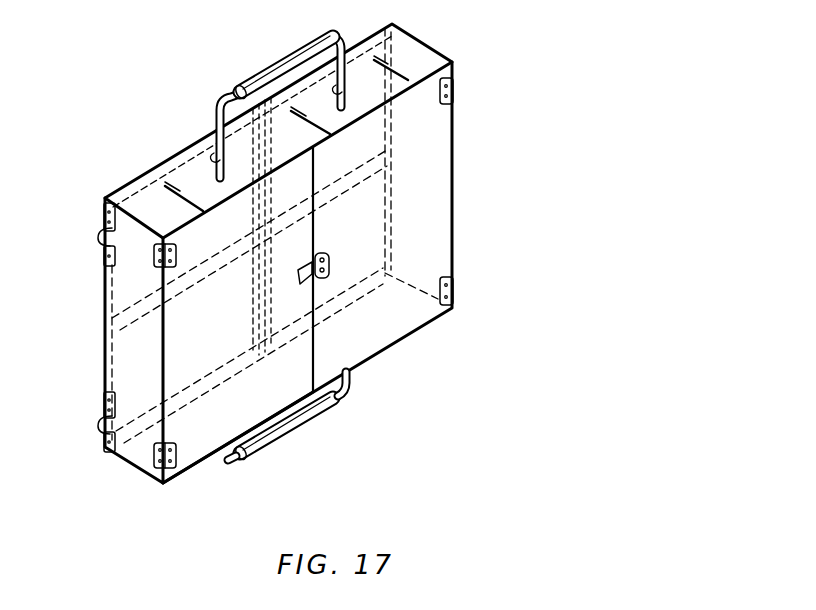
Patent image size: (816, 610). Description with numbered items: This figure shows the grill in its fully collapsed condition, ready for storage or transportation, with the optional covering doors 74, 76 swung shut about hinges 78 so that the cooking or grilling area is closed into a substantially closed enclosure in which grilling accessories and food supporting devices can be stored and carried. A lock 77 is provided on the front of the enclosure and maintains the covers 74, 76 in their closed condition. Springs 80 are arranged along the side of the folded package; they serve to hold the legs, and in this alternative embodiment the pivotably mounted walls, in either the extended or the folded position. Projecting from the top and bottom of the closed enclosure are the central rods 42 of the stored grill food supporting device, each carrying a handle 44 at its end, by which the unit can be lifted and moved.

The central rods 42 is at (218, 105).
The handles 44 is at (288, 58).
The covering door 74 is at (413, 318).
The covering door 76 is at (195, 452).
The lock 77 is at (330, 280).
The hinges 78 is at (456, 84).
The springs 80 is at (100, 240).